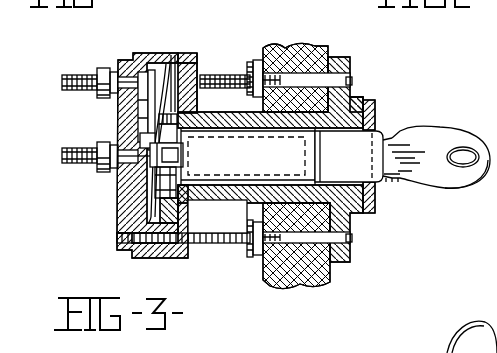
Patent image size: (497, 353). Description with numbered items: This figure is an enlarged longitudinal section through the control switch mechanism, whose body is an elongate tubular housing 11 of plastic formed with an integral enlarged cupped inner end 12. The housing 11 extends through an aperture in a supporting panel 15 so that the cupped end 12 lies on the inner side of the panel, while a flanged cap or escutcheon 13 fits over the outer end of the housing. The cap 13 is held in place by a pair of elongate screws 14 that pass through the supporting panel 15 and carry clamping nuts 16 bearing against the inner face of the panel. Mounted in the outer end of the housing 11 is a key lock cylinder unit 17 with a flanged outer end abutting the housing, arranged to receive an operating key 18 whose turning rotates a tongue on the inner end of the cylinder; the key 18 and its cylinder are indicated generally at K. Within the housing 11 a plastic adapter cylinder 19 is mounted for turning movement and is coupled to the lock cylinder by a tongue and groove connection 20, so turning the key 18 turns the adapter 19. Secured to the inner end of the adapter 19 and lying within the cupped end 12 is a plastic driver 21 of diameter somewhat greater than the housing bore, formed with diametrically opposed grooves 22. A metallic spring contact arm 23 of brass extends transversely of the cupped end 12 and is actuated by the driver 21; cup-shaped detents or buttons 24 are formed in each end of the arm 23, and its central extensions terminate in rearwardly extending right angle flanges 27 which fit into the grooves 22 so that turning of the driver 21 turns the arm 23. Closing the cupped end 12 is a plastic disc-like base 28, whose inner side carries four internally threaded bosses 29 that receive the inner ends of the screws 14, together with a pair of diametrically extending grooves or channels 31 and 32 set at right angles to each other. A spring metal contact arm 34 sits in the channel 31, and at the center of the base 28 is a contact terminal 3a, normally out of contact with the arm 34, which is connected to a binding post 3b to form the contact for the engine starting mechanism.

The contact terminal 3a is at (113, 173).
The binding post 3b is at (64, 82).
The tubular housing 11 is at (363, 198).
The cupped inner end 12 is at (167, 110).
The flanged cap or escutcheon 13 is at (357, 107).
The elongate screws 14 is at (232, 72).
The supporting panel 15 is at (330, 272).
The clamping nuts 16 is at (253, 62).
The key lock cylinder unit 17 is at (357, 147).
The operating key 18 is at (447, 140).
The adapter cylinder 19 is at (240, 203).
The tongue and groove connection 20 is at (357, 90).
The driver 21 is at (188, 60).
The grooves 22 is at (170, 163).
The spring contact arm 23 is at (173, 55).
The cup-shaped detents or buttons 24 is at (164, 62).
The right angle flanges 27 is at (217, 216).
The disc-like base 28 is at (117, 220).
The bosses 29 is at (153, 258).
The groove or channel 31 is at (117, 202).
The groove or channel 32 is at (143, 110).
The spring metal contact arm 34 is at (148, 150).
The key assembly K is at (390, 111).